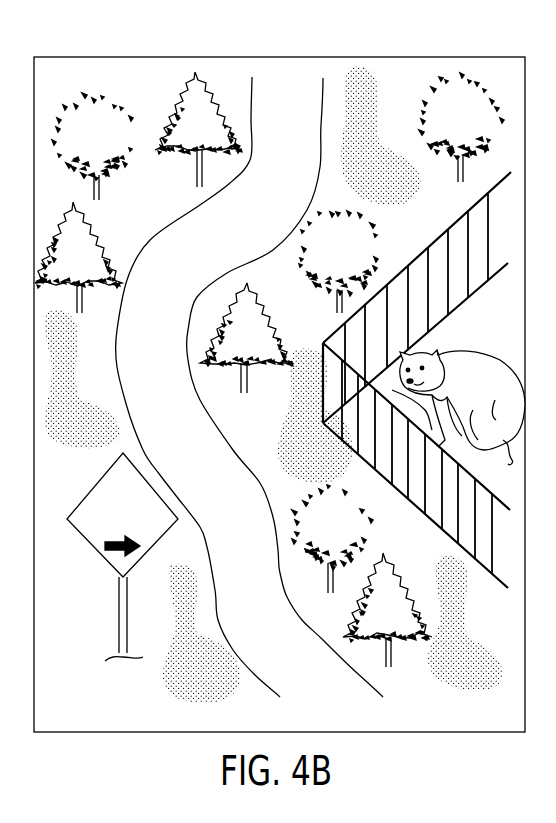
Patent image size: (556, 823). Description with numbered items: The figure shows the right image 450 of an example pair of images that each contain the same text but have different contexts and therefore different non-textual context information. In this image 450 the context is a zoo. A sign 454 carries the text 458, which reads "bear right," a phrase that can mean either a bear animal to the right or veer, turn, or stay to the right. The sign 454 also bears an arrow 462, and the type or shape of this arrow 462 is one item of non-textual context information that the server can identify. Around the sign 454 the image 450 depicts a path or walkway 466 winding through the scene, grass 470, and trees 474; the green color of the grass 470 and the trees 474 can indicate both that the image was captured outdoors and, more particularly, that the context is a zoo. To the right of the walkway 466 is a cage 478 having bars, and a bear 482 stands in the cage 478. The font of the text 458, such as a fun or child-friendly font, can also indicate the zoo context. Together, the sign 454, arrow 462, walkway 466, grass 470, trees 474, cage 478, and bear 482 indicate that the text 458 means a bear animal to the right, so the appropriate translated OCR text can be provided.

The image 450 is at (267, 57).
The sign 454 is at (111, 557).
The text 458 is at (122, 482).
The arrow 462 is at (117, 552).
The path or walkway 466 is at (357, 690).
The grass 470 is at (372, 160).
The trees 474 is at (113, 155).
The cage 478 is at (323, 343).
The bear 482 is at (480, 367).